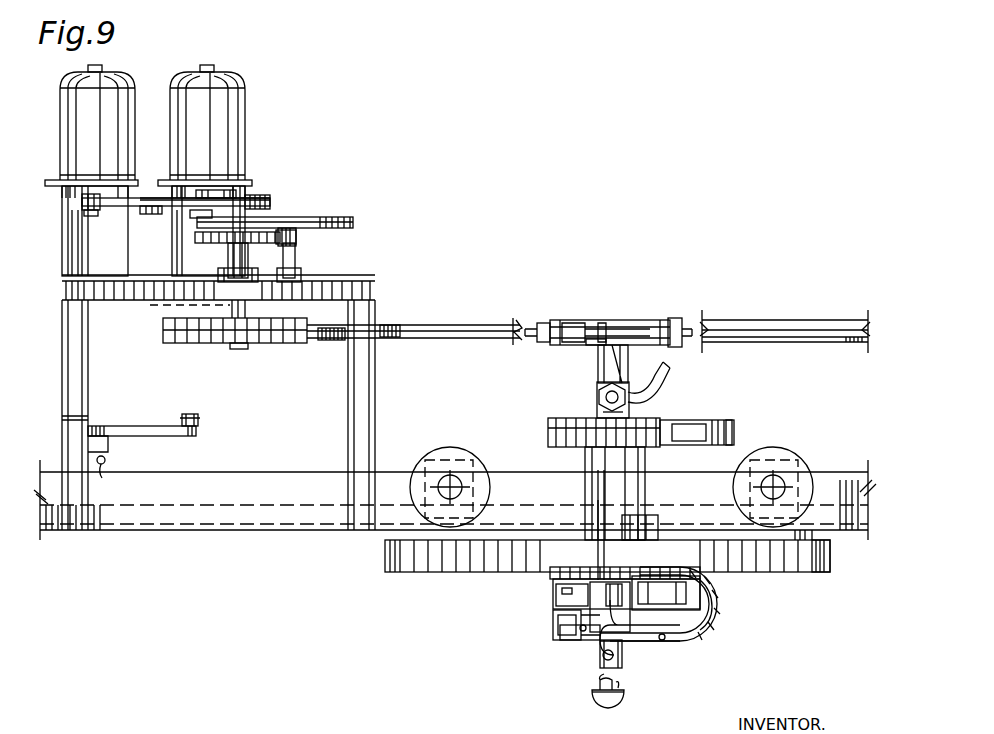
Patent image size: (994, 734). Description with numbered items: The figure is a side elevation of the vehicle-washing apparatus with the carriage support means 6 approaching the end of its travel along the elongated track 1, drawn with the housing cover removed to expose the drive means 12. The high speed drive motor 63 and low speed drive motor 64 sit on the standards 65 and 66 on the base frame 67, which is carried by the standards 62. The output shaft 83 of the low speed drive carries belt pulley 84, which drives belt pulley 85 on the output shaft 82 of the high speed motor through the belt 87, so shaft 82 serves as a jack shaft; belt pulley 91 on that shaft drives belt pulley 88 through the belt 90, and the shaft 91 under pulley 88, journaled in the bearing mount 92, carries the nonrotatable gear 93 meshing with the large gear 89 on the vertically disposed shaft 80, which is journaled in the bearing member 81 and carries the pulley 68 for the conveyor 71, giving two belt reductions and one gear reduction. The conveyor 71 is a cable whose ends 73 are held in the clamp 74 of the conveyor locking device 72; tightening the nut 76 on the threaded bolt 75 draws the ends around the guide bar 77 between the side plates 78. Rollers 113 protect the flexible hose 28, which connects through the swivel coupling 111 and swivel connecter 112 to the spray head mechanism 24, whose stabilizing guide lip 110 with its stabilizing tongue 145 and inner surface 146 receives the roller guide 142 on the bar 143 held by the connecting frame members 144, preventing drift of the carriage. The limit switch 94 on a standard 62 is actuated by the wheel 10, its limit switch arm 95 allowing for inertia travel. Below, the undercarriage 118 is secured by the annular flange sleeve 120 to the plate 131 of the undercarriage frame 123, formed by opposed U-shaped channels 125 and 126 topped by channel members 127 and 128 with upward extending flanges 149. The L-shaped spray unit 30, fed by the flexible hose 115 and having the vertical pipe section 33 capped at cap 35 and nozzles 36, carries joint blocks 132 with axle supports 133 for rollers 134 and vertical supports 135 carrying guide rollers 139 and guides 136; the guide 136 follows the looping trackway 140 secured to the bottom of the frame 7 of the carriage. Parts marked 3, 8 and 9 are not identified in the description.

The elongated track 1 is at (232, 518).
The base 3 is at (160, 518).
The carriage support means 6 is at (386, 554).
The frame of the carriage 7 is at (832, 562).
The axle housing 8 is at (420, 458).
The axle 9 is at (432, 491).
The wheel 10 is at (450, 447).
The drive means 12 is at (248, 208).
The spray head mechanism 24 is at (662, 420).
The flexible hose 28 is at (656, 384).
The L-shaped spray unit 30 is at (594, 697).
The vertical pipe section 33 is at (616, 688).
The cap 35 is at (612, 703).
The nozzles 36 is at (624, 660).
The standards 62 is at (82, 352).
The high speed drive motor 63 is at (214, 100).
The low speed drive motor 64 is at (104, 102).
The standard 65 is at (196, 248).
The standard 66 is at (80, 237).
The base frame 67 is at (146, 290).
The pulley 68 is at (185, 340).
The conveyor 71 is at (166, 330).
The conveyor locking device 72 is at (576, 325).
The ends of the conveyor 73 is at (588, 332).
The clamp 74 is at (584, 342).
The threaded bolt 75 is at (565, 322).
The nut 76 is at (541, 325).
The guide bar 77 is at (604, 352).
The side plates 78 is at (662, 320).
The vertically disposed shaft 80 is at (236, 312).
The bearing member 81 is at (250, 290).
The output shaft 82 is at (208, 187).
The output shaft 83 is at (82, 200).
The belt pulley 84 is at (86, 216).
The belt pulley 85 is at (156, 214).
The belt 87 is at (130, 200).
The belt pulley 88 is at (340, 217).
The large gear 89 is at (249, 250).
The belt 90 is at (292, 220).
The shaft 91 is at (196, 226).
The bearing mount 92 is at (291, 284).
The nonrotatable gear 93 is at (297, 235).
The limit switch 94 is at (109, 450).
The limit switch arm 95 is at (102, 476).
The stabilizing guide lip 110 is at (550, 444).
The swivel coupling 111 is at (598, 410).
The swivel connecter 112 is at (600, 393).
The rollers 113 is at (395, 325).
The flexible hose 115 is at (718, 607).
The undercarriage 118 is at (562, 640).
The annular flange sleeve 120 is at (556, 574).
The undercarriage frame 123 is at (556, 602).
The U-shaped channel 125 is at (553, 628).
The U-shaped channel 126 is at (666, 638).
The U-shaped channel member 127 is at (555, 592).
The U-shaped channel member 128 is at (713, 590).
The plate 131 is at (550, 576).
The joint blocks 132 is at (603, 662).
The axle support 133 is at (552, 622).
The rollers 134 is at (582, 634).
The vertical support 135 is at (702, 572).
The guide 136 is at (636, 515).
The roller 139 is at (656, 576).
The looping trackway 140 is at (410, 568).
The roller guide 142 is at (195, 420).
The bar 143 is at (138, 426).
The connecting frame members 144 is at (68, 416).
The stabilizing tongue 145 is at (726, 420).
The inner surface 146 is at (632, 450).
The upward extending flanges 149 is at (596, 565).